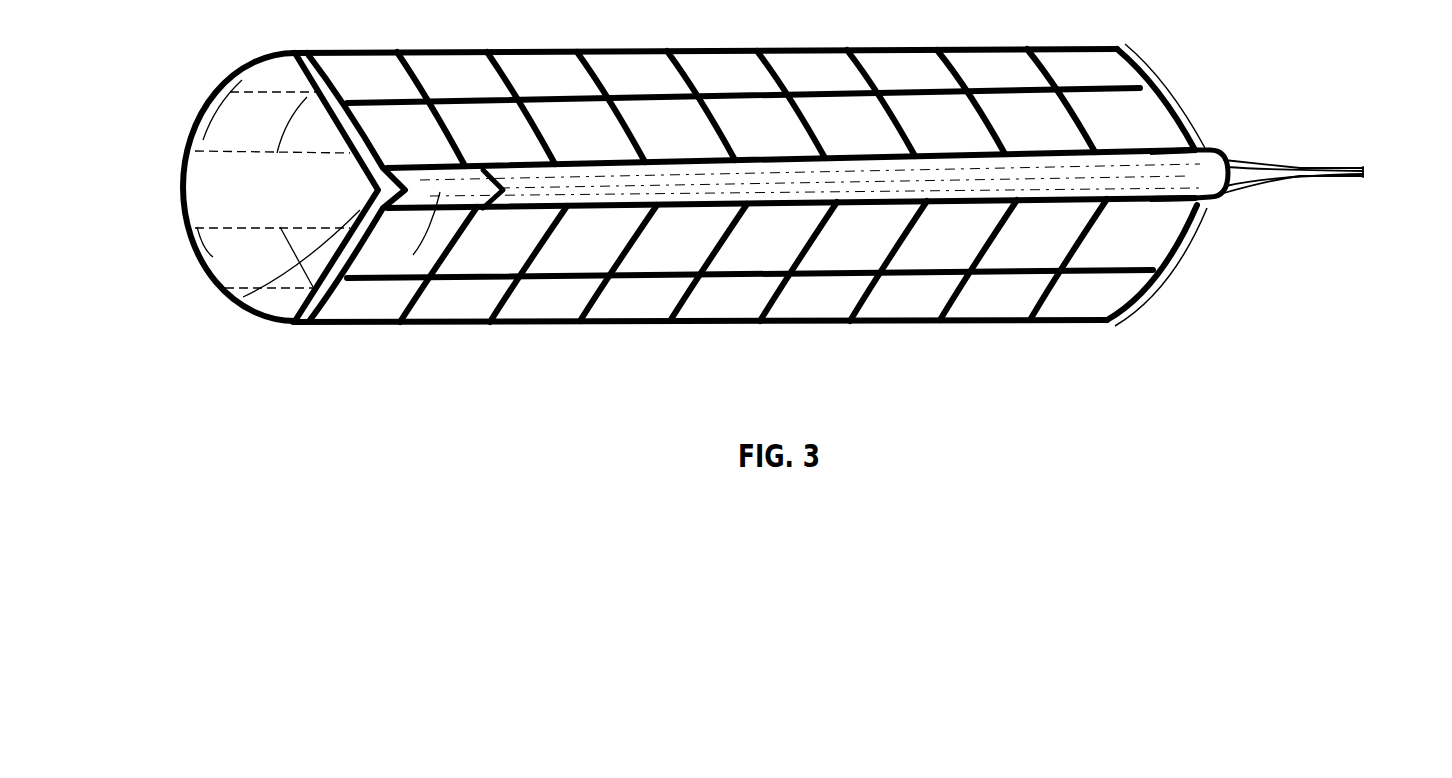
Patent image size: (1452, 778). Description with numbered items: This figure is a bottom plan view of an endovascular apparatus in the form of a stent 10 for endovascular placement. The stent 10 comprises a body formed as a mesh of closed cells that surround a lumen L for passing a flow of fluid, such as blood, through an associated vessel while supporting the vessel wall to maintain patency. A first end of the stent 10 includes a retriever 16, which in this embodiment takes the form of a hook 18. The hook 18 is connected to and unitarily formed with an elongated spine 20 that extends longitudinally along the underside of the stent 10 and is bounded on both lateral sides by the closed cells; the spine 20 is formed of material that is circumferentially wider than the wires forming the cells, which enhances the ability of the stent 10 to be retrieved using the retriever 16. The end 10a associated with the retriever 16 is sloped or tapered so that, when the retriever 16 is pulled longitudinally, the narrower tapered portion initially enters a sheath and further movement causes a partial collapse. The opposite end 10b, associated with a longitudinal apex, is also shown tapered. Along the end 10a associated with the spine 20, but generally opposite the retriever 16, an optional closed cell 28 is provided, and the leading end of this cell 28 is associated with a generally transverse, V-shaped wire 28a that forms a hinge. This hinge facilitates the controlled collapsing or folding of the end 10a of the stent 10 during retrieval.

The stent 10 is at (798, 345).
The end of the stent 10a is at (1360, 250).
The opposite end of the stent 10b is at (168, 217).
The retriever 16 is at (1282, 200).
The hook 18 is at (1363, 172).
The spine 20 is at (1180, 178).
The closed cell 28 is at (413, 255).
The transverse wire 28a is at (243, 297).
The lumen L is at (220, 178).